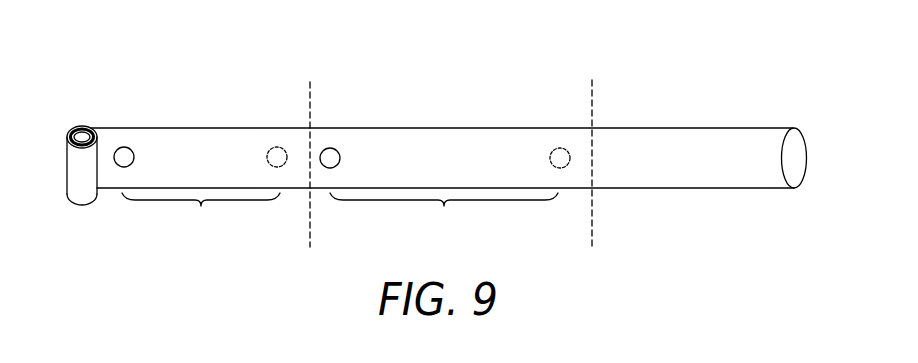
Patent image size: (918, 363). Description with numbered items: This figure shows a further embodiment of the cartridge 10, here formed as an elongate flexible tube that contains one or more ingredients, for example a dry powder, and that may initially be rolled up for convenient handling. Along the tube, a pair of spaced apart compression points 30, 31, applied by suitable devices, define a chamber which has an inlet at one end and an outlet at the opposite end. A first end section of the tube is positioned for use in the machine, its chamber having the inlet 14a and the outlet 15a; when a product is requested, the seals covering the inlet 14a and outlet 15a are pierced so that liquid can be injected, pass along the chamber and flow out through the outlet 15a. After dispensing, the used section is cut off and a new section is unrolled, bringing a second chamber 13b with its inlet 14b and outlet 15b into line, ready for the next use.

The cartridge 10 is at (735, 128).
The second chamber 13b is at (340, 213).
The inlet 14a is at (332, 155).
The inlet 14b is at (125, 156).
The outlet 15a is at (554, 152).
The outlet 15b is at (272, 153).
The compression point 30 is at (311, 104).
The compression point 31 is at (591, 104).